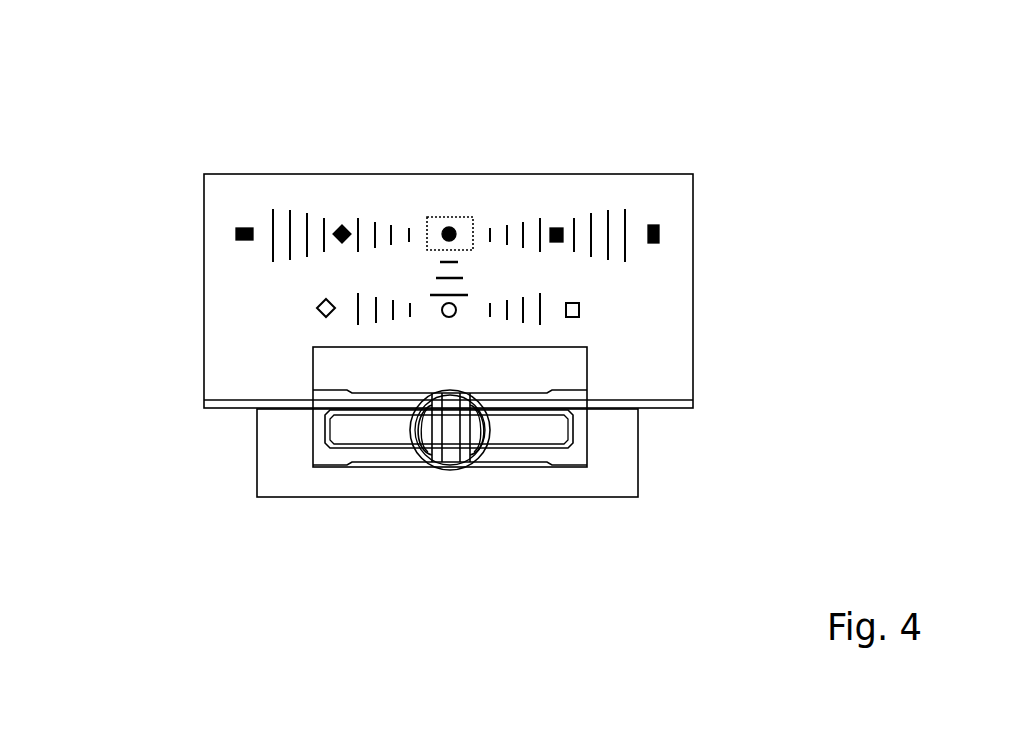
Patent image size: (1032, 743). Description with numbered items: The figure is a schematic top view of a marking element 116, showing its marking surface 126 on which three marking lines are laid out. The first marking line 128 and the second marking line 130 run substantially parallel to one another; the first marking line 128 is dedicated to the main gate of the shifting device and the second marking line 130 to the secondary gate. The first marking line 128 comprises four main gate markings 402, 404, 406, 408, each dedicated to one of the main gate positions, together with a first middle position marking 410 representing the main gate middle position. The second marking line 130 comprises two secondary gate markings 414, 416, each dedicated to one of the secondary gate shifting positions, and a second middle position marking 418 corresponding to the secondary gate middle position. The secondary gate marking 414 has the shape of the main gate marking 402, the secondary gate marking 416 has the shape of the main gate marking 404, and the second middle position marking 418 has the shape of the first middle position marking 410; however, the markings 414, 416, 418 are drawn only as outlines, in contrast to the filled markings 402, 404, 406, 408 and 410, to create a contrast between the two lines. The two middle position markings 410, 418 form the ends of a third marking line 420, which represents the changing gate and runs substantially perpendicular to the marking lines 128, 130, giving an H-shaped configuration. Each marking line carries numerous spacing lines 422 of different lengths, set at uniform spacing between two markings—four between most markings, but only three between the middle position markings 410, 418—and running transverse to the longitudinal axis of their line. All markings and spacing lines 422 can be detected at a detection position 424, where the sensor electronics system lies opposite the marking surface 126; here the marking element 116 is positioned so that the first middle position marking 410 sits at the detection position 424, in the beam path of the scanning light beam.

The marking element 116 is at (693, 199).
The marking surface 126 is at (236, 305).
The first marking line 128 is at (672, 242).
The second marking line 130 is at (610, 309).
The main gate marking 402 is at (244, 228).
The main gate marking 404 is at (340, 226).
The main gate marking 406 is at (559, 228).
The main gate marking 408 is at (653, 225).
The first middle position marking 410 is at (456, 228).
The secondary gate marking 414 is at (318, 314).
The secondary gate marking 416 is at (580, 316).
The second middle position marking 418 is at (444, 316).
The third marking line 420 is at (462, 322).
The spacing lines 422 is at (409, 230).
The detection position 424 is at (449, 217).